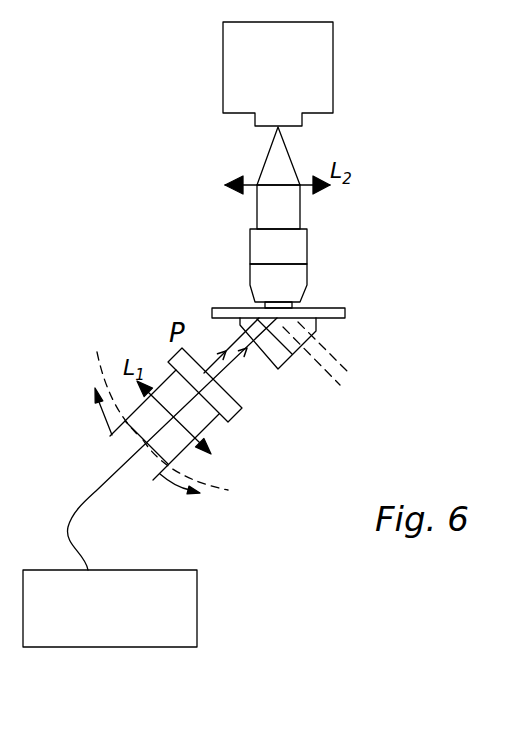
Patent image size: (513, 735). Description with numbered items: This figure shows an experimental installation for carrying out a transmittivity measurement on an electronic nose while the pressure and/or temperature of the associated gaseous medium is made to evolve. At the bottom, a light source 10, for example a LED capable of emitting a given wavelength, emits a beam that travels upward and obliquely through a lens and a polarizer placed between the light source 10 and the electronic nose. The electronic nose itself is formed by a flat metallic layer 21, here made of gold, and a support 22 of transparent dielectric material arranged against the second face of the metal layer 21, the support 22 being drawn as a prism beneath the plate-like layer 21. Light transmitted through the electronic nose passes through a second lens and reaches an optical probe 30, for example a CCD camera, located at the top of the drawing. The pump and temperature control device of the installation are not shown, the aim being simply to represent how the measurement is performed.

The light source 10 is at (123, 653).
The metallic layer 21 is at (211, 311).
The support 22 is at (326, 335).
The optical probe 30 is at (251, 63).